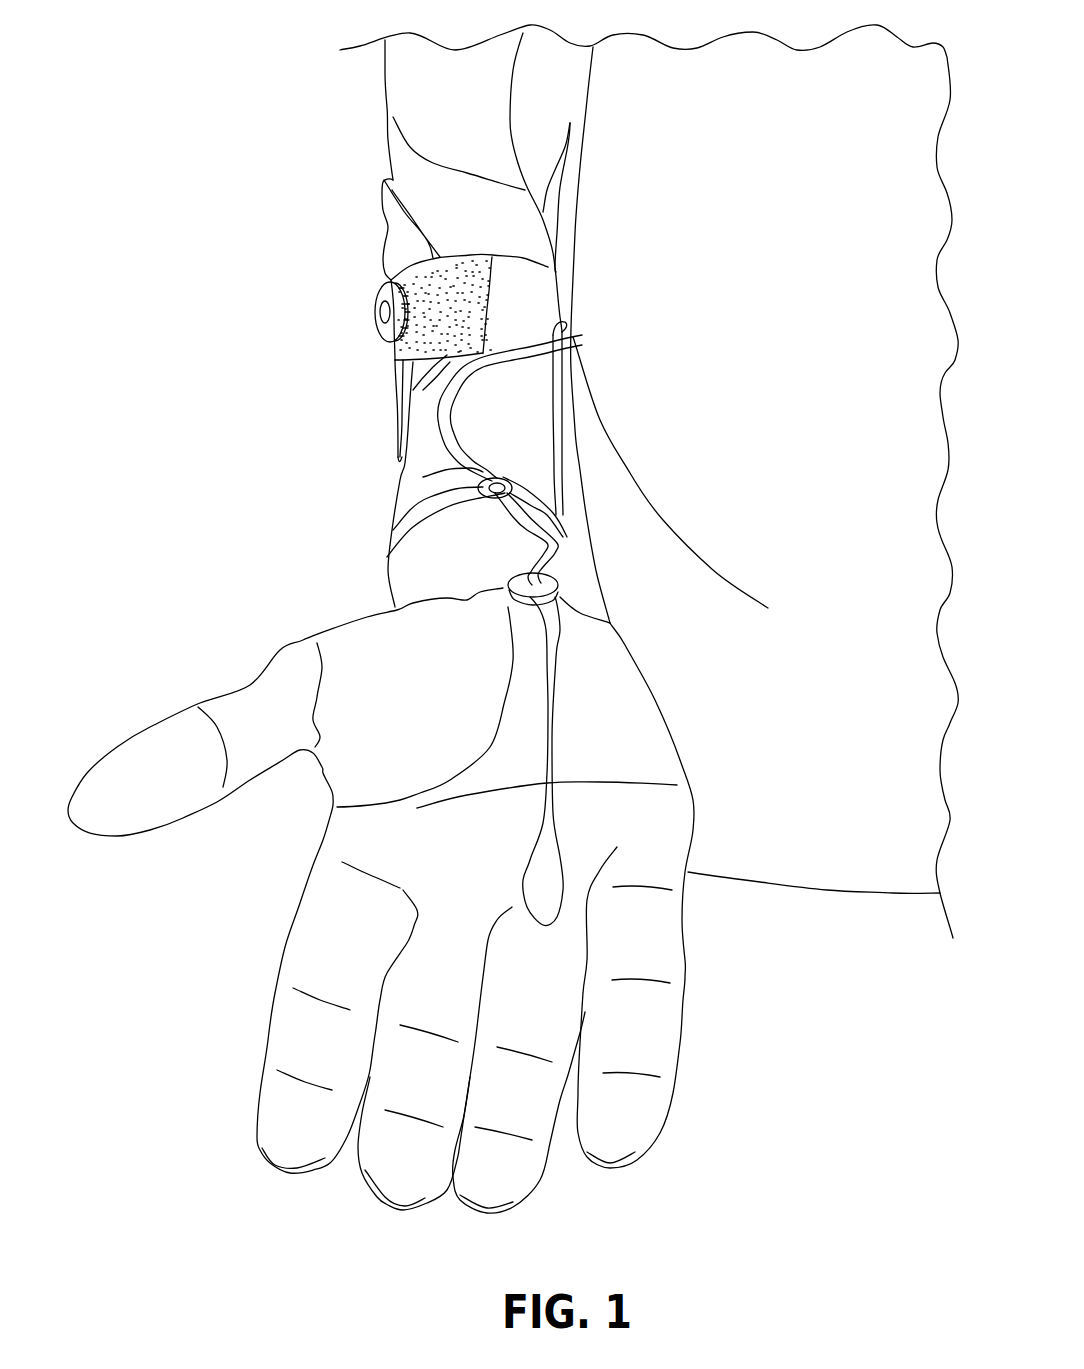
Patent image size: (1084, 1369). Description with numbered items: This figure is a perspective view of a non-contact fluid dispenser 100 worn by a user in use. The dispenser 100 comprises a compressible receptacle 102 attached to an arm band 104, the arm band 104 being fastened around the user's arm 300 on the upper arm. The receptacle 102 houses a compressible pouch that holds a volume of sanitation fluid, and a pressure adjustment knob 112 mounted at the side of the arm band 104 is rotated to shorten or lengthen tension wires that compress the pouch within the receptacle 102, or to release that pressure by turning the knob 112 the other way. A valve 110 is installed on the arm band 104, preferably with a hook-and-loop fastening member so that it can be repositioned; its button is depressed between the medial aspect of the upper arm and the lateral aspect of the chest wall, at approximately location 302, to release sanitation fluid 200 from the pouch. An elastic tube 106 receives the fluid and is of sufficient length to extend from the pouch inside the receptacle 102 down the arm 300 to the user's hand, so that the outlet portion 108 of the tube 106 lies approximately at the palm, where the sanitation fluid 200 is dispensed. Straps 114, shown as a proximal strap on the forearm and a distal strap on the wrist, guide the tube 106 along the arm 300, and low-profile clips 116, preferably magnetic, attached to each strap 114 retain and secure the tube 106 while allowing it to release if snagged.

The non-contact fluid dispenser 100 is at (227, 266).
The compressible receptacle 102 is at (386, 243).
The arm band 104 is at (523, 293).
The tube 106 is at (458, 437).
The outlet portion 108 is at (562, 632).
The valve 110 is at (570, 339).
The pressure adjustment knob 112 is at (368, 320).
The straps 114 is at (393, 553).
The clips 116 is at (403, 490).
The sanitation fluid 200 is at (575, 823).
The user's arm 300 is at (420, 60).
The location 302 is at (579, 316).